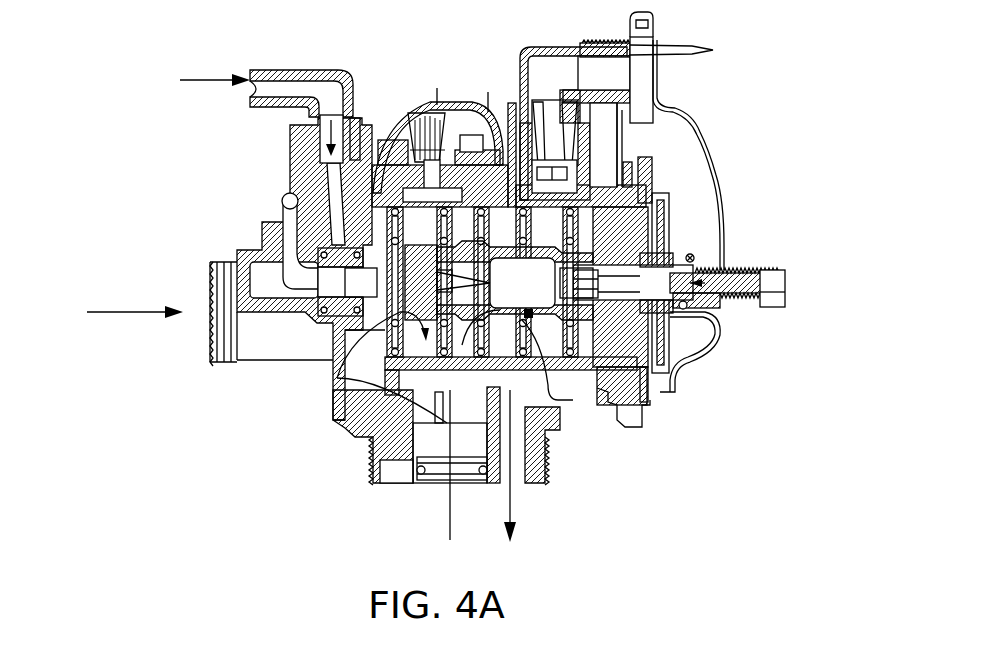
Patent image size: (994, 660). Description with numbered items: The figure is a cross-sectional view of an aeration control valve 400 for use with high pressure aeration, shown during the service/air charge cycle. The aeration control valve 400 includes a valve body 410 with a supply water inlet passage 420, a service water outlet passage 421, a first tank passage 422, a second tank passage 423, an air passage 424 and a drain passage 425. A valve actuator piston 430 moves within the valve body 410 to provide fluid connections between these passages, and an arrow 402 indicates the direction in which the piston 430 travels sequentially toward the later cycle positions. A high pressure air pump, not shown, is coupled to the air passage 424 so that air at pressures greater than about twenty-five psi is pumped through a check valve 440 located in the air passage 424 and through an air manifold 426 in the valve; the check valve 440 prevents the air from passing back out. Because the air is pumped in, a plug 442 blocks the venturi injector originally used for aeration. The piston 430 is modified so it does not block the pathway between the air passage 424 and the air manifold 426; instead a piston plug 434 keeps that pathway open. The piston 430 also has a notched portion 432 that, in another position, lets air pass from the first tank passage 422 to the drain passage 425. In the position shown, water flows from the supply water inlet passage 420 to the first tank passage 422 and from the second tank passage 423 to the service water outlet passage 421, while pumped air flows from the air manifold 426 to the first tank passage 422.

The aeration control valve 400 is at (165, 147).
The arrow 402 is at (775, 270).
The valve body 410 is at (270, 238).
The supply water inlet passage 420 is at (569, 368).
The service water outlet passage 421 is at (337, 378).
The first tank passage 422 is at (514, 480).
The second tank passage 423 is at (428, 480).
The air passage 424 is at (303, 84).
The drain passage 425 is at (556, 68).
The air manifold 426 is at (287, 194).
The valve actuator piston 430 is at (700, 260).
The notched portion 432 is at (516, 309).
The piston plug 434 is at (337, 282).
The check valve 440 is at (338, 117).
The plug 442 is at (470, 153).